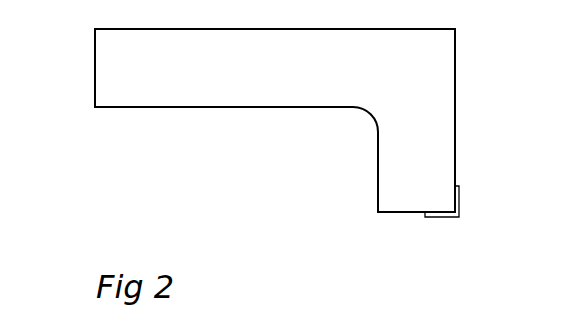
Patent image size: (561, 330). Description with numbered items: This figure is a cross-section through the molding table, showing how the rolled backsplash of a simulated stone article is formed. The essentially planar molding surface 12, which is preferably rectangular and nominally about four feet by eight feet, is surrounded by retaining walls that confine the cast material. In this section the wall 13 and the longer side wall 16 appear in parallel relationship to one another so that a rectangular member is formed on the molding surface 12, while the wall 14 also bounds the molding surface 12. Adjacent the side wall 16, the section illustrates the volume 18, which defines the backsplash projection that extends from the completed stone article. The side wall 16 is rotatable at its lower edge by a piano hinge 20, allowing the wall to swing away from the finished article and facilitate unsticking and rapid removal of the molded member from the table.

The molding surface 12 is at (291, 107).
The wall 13 is at (95, 61).
The wall 14 is at (415, 76).
The side wall 16 is at (455, 100).
The volume 18 is at (378, 152).
The piano hinge 20 is at (461, 206).